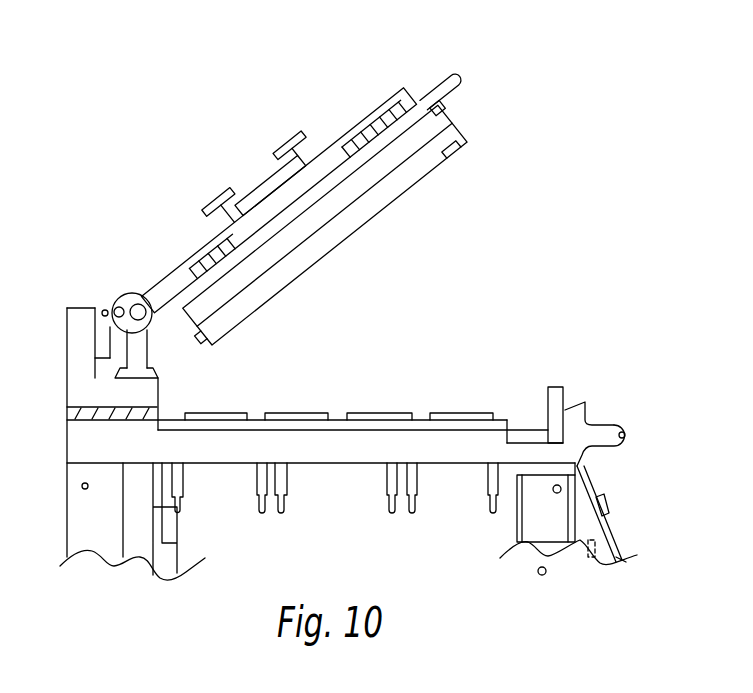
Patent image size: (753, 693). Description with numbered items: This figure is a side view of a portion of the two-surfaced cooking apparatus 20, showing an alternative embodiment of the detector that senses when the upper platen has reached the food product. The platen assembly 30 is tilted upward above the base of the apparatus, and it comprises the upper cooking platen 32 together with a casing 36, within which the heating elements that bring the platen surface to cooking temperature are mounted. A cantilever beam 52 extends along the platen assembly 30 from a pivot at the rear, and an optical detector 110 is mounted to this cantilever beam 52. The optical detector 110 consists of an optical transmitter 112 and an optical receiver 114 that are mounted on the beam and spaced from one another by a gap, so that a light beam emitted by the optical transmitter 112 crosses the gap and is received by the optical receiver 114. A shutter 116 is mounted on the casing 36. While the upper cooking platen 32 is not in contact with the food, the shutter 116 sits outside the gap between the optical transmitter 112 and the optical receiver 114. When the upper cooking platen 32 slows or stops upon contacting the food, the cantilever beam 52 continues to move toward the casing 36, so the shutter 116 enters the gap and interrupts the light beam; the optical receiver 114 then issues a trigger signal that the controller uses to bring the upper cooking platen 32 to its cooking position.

The cooking apparatus 20 is at (192, 167).
The platen assembly 30 is at (398, 225).
The upper cooking platen 32 is at (435, 148).
The casing 36 is at (455, 112).
The cantilever beam 52 is at (167, 270).
The optical detector 110 is at (295, 97).
The optical transmitter 112 is at (212, 203).
The optical receiver 114 is at (300, 128).
The shutter 116 is at (258, 203).